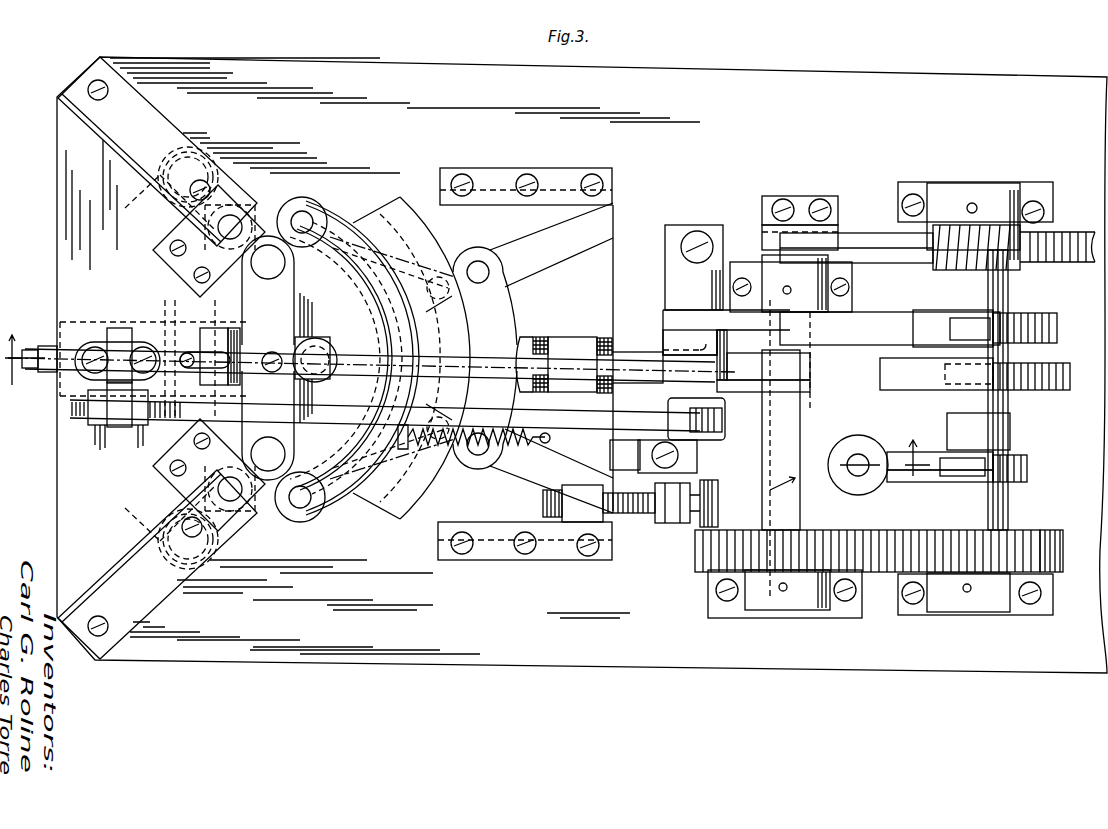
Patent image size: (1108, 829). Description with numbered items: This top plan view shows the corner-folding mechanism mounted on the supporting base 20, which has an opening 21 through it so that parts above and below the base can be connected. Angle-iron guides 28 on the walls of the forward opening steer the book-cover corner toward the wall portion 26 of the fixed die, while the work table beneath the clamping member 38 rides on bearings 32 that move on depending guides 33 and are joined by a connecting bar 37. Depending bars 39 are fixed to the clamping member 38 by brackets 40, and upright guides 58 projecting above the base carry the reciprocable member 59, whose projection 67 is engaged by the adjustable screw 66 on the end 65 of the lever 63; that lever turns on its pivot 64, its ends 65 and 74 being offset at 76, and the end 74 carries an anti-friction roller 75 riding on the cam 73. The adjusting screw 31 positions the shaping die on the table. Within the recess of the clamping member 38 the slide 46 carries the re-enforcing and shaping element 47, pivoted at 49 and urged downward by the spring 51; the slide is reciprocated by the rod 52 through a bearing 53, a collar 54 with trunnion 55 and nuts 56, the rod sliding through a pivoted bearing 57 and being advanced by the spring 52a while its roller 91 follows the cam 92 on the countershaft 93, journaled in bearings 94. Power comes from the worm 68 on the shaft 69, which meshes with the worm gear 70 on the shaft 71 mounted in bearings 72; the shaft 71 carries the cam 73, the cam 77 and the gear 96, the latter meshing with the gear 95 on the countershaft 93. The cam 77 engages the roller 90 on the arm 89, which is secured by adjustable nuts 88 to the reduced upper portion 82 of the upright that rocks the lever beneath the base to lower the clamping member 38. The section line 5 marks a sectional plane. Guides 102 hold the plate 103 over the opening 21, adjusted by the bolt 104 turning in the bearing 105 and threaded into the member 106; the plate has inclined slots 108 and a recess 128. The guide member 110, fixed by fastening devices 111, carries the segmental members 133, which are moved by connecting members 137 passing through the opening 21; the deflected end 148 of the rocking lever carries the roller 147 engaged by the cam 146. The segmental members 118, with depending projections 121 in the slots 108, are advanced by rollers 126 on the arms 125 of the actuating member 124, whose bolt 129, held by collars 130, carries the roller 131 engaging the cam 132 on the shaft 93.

The supporting base 20 is at (982, 88).
The clamping member 38 is at (62, 200).
The guides 28 is at (112, 152).
The guides 33 is at (200, 150).
The bearings 32 is at (222, 160).
The connecting bar 37 is at (172, 282).
The depending bars 39 is at (232, 215).
The brackets 40 is at (260, 212).
The upright guides 58 is at (268, 358).
The connecting members 137 is at (310, 214).
The opening 21 is at (314, 196).
The fastening devices 111 is at (350, 240).
The guide member 110 is at (420, 328).
The segmental shaped members 133 is at (415, 273).
The depending projection 121 is at (434, 276).
The segmental shaped member 118 is at (427, 237).
The anti-friction rollers 126 is at (480, 258).
The slots 108 is at (460, 260).
The plate 103 is at (602, 262).
The bolt 129 is at (620, 346).
The guides 102 is at (578, 174).
The lever 63 is at (448, 358).
The pivotally mounted bearing 57 is at (590, 354).
The bar or rod 52 is at (652, 410).
The spring 52a is at (440, 456).
The adjusting device or screw 31 is at (52, 345).
The section line 5 is at (465, 422).
The collar 54 is at (58, 374).
The slide 46 is at (52, 318).
The bearing 53 is at (96, 345).
The trunnion 55 is at (124, 330).
The nuts or collars 56 is at (112, 426).
The spring 51 is at (180, 352).
The pivot 49 is at (206, 330).
The reciprocable member 59 is at (236, 326).
The re-enforcing and shaping element 47 is at (282, 352).
The lever end 65 is at (318, 420).
The adjustable screw or bolt 66 is at (324, 338).
The projection 67 is at (310, 346).
The die portion 26 is at (300, 372).
The recess 128 is at (538, 336).
The nuts or collars 130 is at (602, 336).
The actuating member 124 is at (556, 352).
The laterally projecting arms 125 is at (528, 335).
The pivot 64 is at (690, 270).
The offset 76 is at (694, 313).
The anti-friction roller 131 is at (700, 354).
The bearings 94 is at (740, 262).
The shaft 69 is at (870, 240).
The bearings 72 is at (950, 192).
The worm 68 is at (1012, 192).
The worm gear 70 is at (1070, 236).
The lever end 74 is at (906, 322).
The anti-friction roller 75 is at (958, 330).
The cam 73 is at (1050, 314).
The cam 92 is at (930, 372).
The anti-friction roller 147 is at (1000, 372).
The cam 146 is at (1066, 364).
The lever end 148 is at (940, 400).
The shaft 71 is at (996, 428).
The reduced upper portion 82 is at (918, 447).
The arm 89 is at (926, 484).
The roller 90 is at (975, 478).
The cam 77 is at (1024, 468).
The adjustable nuts or collars 88 is at (860, 490).
The anti-friction roller 91 is at (722, 440).
The countershaft 93 is at (765, 489).
The cam 132 is at (784, 366).
The gear 95 is at (706, 566).
The gear 96 is at (1060, 572).
The member 106 is at (598, 522).
The adjusting bolt 104 is at (640, 514).
The bearing 105 is at (670, 524).